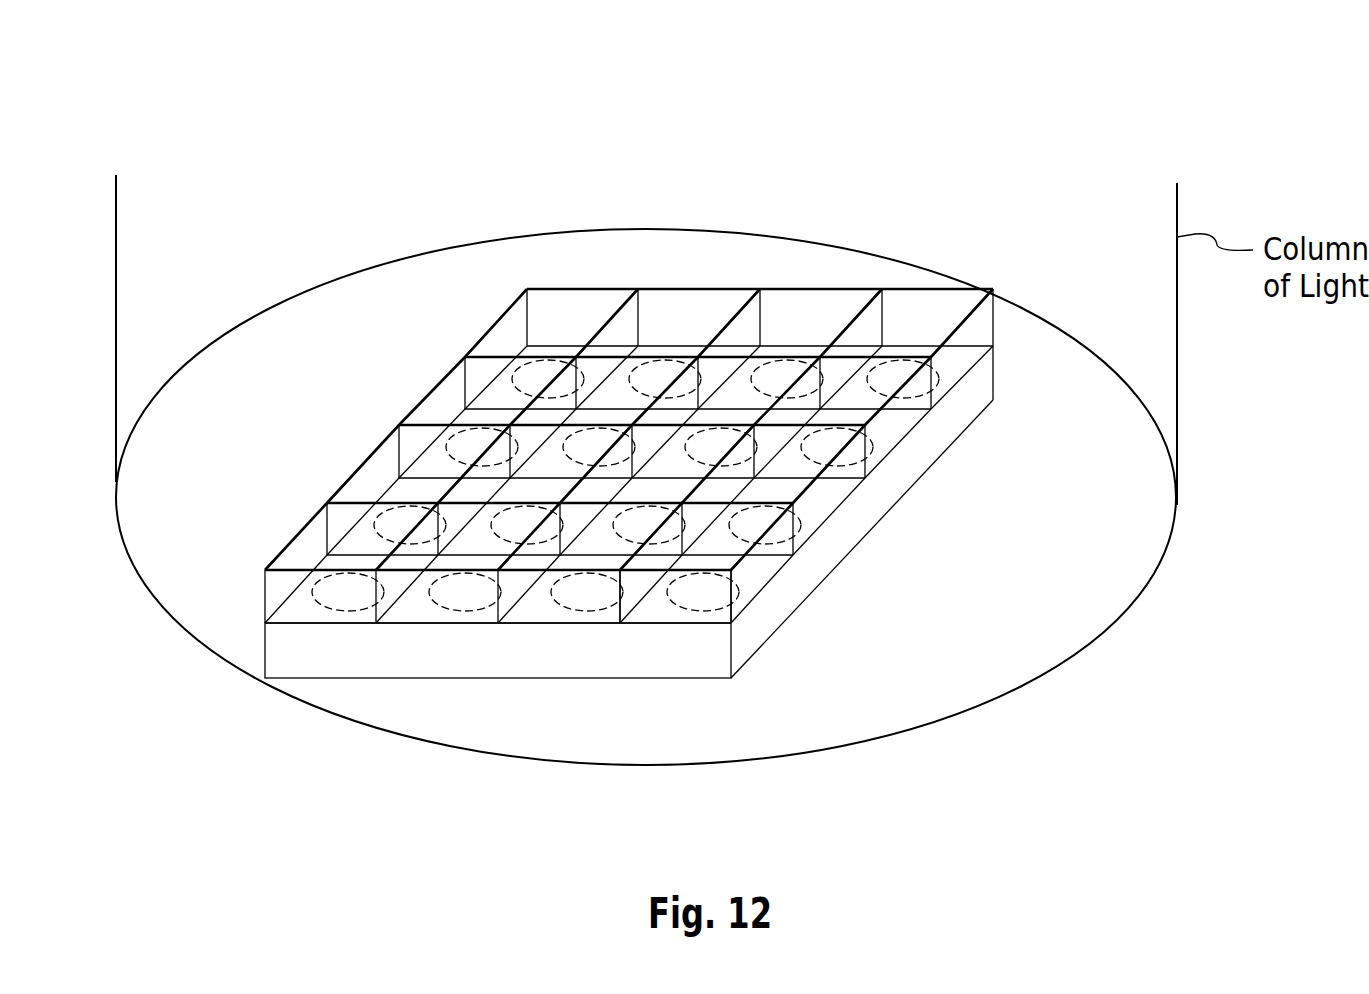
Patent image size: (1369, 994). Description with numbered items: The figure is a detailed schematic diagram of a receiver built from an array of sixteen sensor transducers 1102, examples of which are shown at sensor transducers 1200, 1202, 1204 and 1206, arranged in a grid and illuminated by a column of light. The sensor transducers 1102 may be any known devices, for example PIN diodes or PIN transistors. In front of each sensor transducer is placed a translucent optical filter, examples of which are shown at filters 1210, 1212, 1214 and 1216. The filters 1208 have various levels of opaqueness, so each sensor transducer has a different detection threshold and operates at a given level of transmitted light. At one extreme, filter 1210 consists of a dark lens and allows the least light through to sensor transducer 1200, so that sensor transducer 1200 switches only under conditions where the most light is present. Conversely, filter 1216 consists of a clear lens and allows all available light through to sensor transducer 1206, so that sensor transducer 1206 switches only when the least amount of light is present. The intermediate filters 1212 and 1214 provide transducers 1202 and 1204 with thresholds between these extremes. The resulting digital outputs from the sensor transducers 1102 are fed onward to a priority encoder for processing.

The sensor transducers 1102 is at (343, 666).
The sensor transducer 1200 is at (758, 582).
The sensor transducer 1202 is at (830, 505).
The sensor transducer 1204 is at (900, 430).
The sensor transducer 1206 is at (958, 368).
The filters 1208 is at (367, 455).
The filter 1210 is at (653, 573).
The filter 1212 is at (730, 447).
The filter 1214 is at (806, 371).
The filter 1216 is at (917, 290).